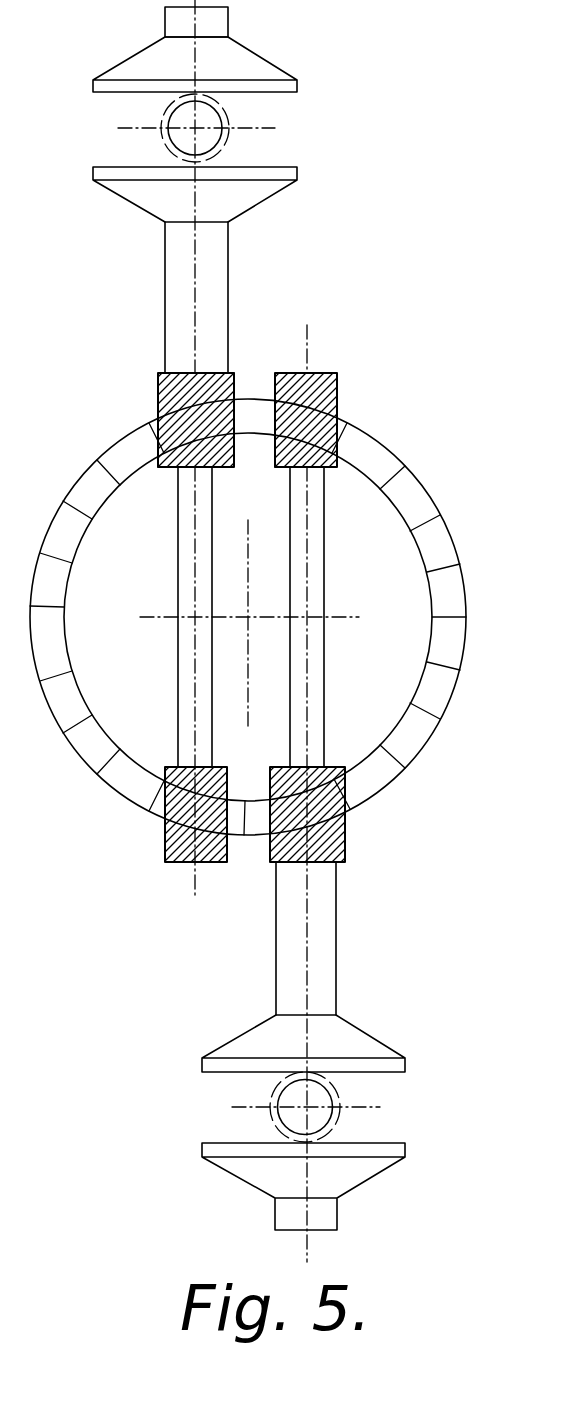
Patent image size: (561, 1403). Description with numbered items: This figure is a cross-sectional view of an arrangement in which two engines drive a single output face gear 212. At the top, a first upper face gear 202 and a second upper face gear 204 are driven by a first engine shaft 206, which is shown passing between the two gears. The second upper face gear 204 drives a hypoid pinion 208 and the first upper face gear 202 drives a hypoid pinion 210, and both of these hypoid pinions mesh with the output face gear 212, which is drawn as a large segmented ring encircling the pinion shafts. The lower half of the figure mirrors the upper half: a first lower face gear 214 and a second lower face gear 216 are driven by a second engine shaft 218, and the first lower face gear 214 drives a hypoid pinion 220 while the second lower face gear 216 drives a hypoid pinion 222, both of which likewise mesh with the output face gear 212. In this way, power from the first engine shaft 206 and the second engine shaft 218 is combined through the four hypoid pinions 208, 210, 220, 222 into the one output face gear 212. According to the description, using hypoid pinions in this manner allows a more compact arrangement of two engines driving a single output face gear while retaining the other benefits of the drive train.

The first upper face gear 202 is at (244, 63).
The second upper face gear 204 is at (252, 198).
The first engine shaft 206 is at (187, 165).
The hypoid pinion 208 is at (158, 390).
The hypoid pinion 210 is at (165, 845).
The output face gear 212 is at (430, 540).
The first lower face gear 214 is at (353, 1047).
The second lower face gear 216 is at (357, 1177).
The second engine shaft 218 is at (342, 1117).
The hypoid pinion 220 is at (346, 848).
The hypoid pinion 222 is at (327, 398).